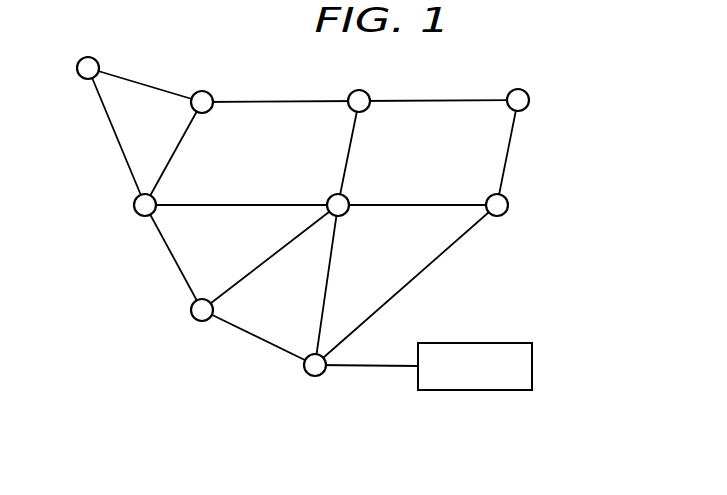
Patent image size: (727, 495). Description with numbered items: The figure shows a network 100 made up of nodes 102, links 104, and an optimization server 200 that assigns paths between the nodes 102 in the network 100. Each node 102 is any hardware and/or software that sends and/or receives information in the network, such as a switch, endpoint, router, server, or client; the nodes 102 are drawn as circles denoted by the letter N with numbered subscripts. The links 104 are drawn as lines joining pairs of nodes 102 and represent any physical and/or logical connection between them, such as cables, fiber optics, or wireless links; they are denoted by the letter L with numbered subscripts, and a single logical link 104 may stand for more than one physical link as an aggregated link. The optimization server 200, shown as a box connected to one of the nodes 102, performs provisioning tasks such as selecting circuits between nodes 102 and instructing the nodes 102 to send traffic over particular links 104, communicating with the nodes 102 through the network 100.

The network 100 is at (329, 237).
The node 102 is at (526, 108).
The link 104 is at (247, 94).
The optimization server 200 is at (473, 390).